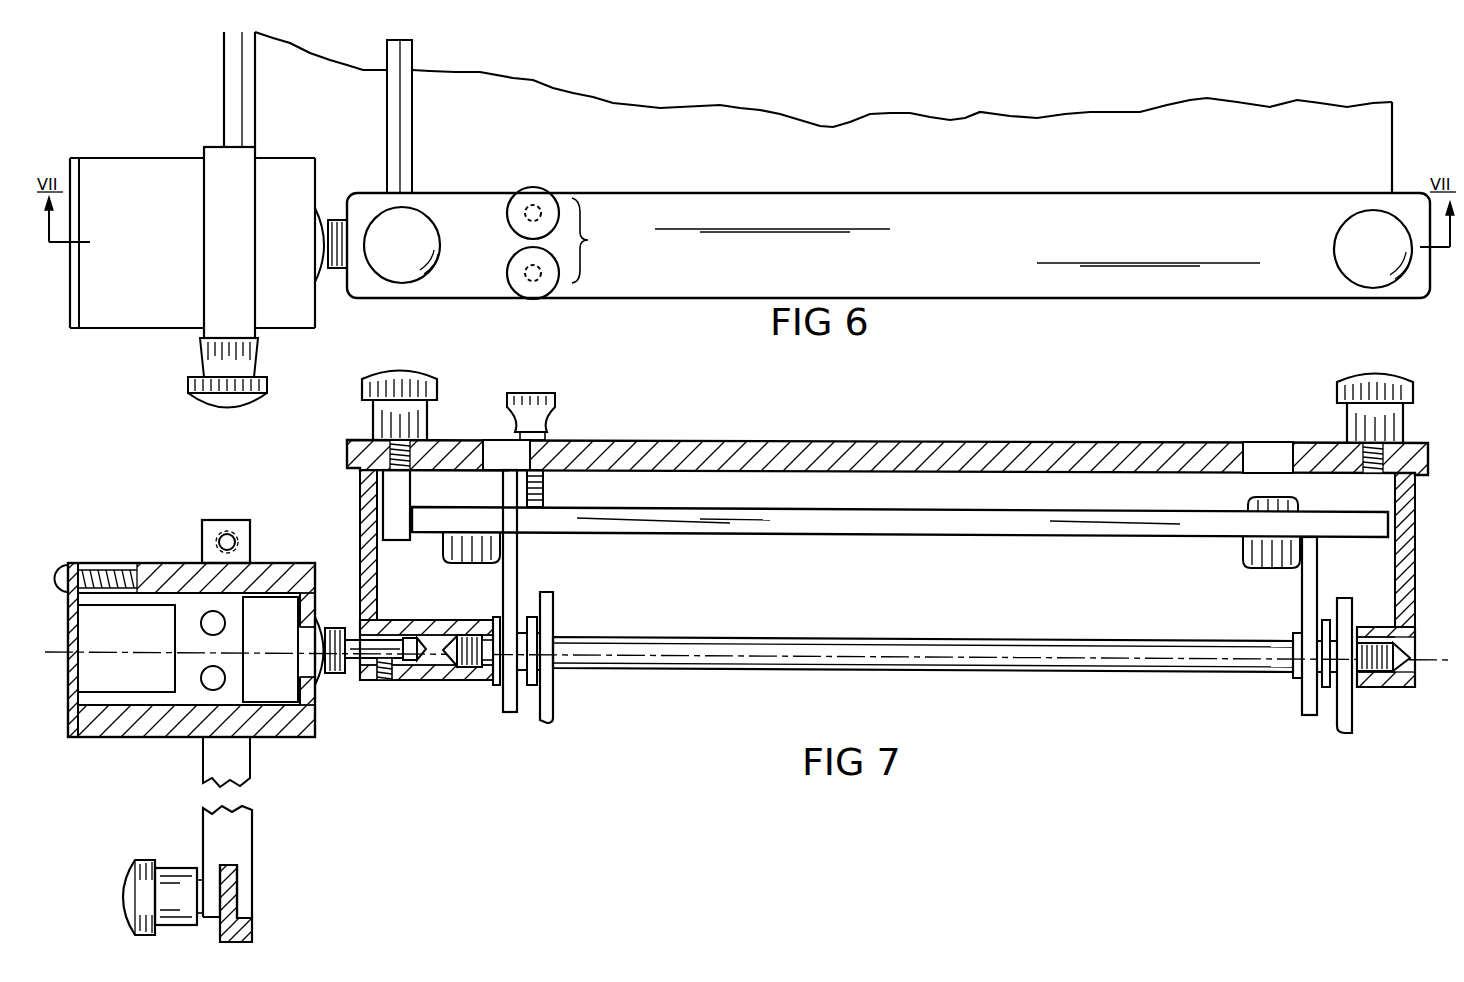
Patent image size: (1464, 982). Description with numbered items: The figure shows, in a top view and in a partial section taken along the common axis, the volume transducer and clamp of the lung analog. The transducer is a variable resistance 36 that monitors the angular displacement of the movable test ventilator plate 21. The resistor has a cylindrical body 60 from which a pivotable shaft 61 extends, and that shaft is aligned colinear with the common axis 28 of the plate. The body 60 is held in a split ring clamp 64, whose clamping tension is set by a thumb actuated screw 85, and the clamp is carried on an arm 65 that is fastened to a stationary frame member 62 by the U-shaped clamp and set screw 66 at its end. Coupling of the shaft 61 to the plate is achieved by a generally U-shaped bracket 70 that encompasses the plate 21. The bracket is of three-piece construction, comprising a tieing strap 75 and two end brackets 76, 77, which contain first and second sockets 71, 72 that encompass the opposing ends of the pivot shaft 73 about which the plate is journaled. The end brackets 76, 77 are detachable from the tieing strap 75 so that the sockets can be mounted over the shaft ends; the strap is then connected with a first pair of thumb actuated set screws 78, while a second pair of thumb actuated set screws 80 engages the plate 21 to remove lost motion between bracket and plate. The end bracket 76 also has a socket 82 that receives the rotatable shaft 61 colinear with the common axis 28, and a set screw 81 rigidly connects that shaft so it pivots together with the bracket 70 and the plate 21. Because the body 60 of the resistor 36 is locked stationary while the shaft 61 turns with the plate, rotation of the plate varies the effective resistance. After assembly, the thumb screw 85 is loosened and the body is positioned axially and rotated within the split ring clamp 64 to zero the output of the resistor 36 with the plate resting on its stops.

In FIG. 6, the test ventilator plate 21 is at (991, 156).
In FIG. 7, the test ventilator plate 21 is at (908, 522).
In FIG. 7, the common axis 28 is at (55, 647).
In FIG. 6, the variable resistance 36 is at (72, 328).
In FIG. 7, the variable resistance 36 is at (71, 735).
In FIG. 6, the cylindrical body 60 is at (177, 282).
In FIG. 7, the cylindrical body 60 is at (157, 568).
In FIG. 7, the pivotable shaft 61 is at (381, 647).
In FIG. 7, the frame member 62 is at (253, 935).
In FIG. 6, the split ring clamp 64 is at (222, 158).
In FIG. 7, the split ring clamp 64 is at (212, 523).
In FIG. 7, the arm 65 is at (238, 825).
In FIG. 7, the U-shaped clamp and set screw 66 is at (172, 937).
In FIG. 6, the U-shaped bracket 70 is at (888, 213).
In FIG. 7, the U-shaped bracket 70 is at (847, 541).
In FIG. 7, the first socket 71 is at (443, 672).
In FIG. 7, the second socket 72 is at (1395, 682).
In FIG. 7, the pivot shaft 73 is at (1082, 666).
In FIG. 6, the tieing strap 75 is at (992, 226).
In FIG. 7, the tieing strap 75 is at (858, 452).
In FIG. 7, the end bracket 76 is at (360, 500).
In FIG. 7, the end bracket 77 is at (1405, 508).
In FIG. 6, the thumb actuated set screws 78 is at (407, 223).
In FIG. 7, the thumb actuated set screws 78 is at (411, 385).
In FIG. 6, the thumb actuated set screws 80 is at (568, 243).
In FIG. 7, the set screw 81 is at (386, 683).
In FIG. 7, the socket 82 is at (411, 648).
In FIG. 6, the thumb actuated screw 85 is at (213, 394).